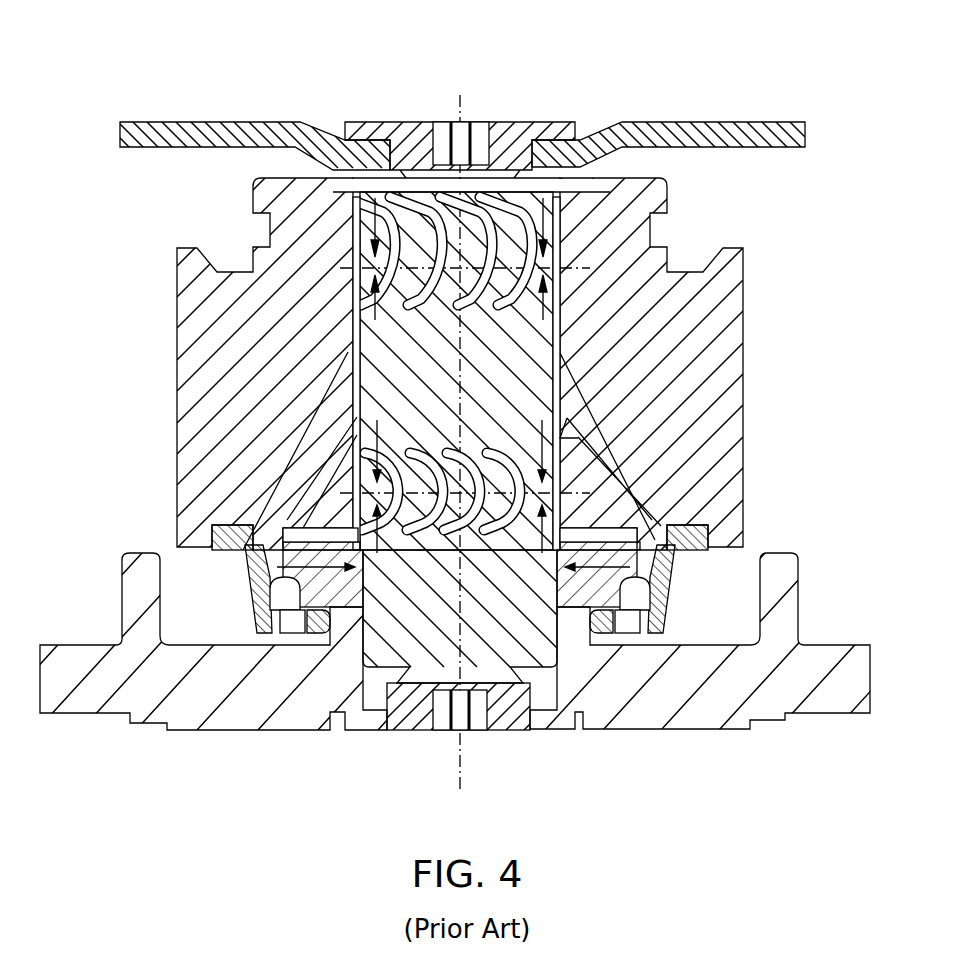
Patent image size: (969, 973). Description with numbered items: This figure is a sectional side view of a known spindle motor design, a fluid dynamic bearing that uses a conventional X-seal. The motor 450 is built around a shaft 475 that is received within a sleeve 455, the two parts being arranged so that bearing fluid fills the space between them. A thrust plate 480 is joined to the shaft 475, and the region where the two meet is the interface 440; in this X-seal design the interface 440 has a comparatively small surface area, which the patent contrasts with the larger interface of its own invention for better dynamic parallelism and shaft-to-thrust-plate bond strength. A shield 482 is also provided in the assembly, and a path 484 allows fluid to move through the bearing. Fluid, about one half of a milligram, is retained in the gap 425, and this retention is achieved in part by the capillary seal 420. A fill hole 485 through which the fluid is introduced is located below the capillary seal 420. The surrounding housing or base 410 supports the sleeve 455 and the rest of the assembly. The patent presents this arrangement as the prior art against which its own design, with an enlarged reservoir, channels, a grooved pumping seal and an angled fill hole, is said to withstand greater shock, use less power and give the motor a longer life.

The base housing 410 is at (687, 708).
The capillary seal 420 is at (243, 567).
The gap 425 is at (349, 399).
The interface 440 is at (567, 610).
The motor 450 is at (276, 88).
The sleeve 455 is at (693, 327).
The shaft 475 is at (514, 395).
The thrust plate 480 is at (293, 520).
The shield 482 is at (260, 592).
The path 484 is at (313, 457).
The fill hole 485 is at (293, 622).